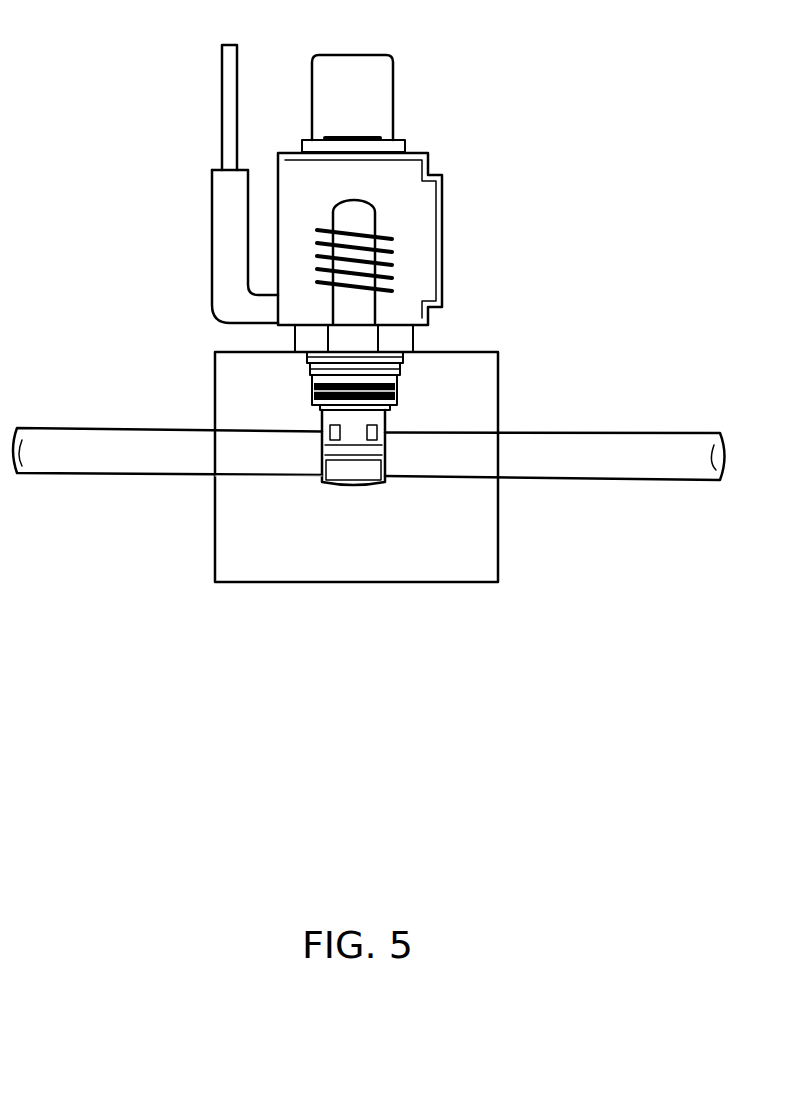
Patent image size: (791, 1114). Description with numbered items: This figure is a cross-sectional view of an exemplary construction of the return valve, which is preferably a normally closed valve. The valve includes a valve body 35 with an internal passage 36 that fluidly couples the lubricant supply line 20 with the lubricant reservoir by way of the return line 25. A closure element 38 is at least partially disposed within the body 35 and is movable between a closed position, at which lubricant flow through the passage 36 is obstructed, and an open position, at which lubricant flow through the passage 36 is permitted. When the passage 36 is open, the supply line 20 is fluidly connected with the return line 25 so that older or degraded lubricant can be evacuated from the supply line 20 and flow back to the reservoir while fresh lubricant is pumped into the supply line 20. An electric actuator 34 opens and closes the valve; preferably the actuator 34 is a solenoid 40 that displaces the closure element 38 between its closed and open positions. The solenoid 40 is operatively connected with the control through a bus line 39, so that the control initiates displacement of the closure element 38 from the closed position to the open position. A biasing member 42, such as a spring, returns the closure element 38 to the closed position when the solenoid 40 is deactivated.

The lubricant supply line 20 is at (652, 478).
The return line 25 is at (88, 472).
The electric actuator 34 is at (380, 223).
The valve body 35 is at (447, 568).
The internal passage 36 is at (257, 463).
The closure element 38 is at (325, 418).
The bus line 39 is at (222, 97).
The solenoid 40 is at (380, 268).
The biasing member 42 is at (307, 373).